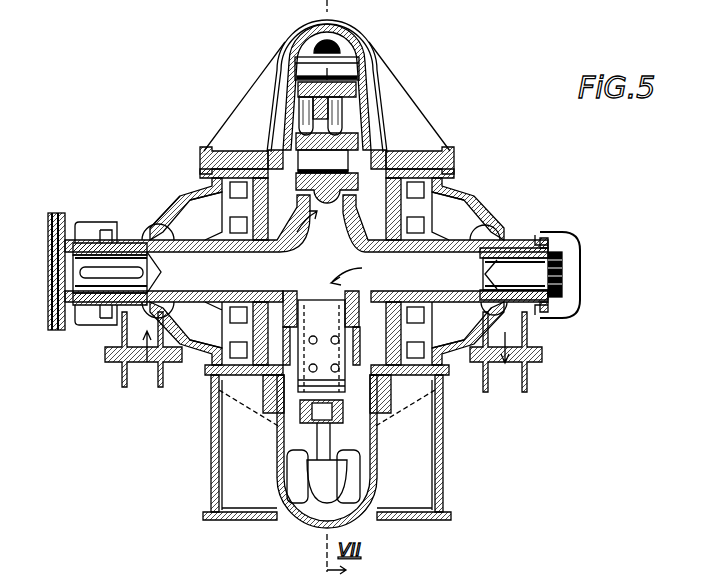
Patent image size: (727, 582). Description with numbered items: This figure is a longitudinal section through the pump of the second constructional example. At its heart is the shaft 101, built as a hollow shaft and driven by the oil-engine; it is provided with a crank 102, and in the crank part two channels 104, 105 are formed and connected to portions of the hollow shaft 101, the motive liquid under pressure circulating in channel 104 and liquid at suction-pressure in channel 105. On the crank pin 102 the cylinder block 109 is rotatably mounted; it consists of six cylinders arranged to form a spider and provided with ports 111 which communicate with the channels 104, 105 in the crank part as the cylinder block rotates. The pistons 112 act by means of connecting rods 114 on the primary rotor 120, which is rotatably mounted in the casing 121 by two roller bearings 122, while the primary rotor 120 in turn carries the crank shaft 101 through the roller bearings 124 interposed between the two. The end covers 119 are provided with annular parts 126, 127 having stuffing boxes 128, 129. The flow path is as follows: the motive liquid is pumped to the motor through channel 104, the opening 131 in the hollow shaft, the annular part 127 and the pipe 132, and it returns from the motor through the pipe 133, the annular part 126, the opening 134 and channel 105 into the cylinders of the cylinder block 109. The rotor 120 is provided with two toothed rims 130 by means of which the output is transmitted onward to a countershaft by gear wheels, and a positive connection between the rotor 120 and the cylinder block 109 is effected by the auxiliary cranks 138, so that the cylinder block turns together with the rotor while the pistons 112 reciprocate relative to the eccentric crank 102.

The shaft 101 is at (72, 302).
The crank 102 is at (442, 176).
The channel 104 is at (355, 274).
The channel 105 is at (306, 280).
The cylinder block 109 is at (352, 140).
The ports 111 is at (410, 150).
The pistons 112 is at (296, 140).
The connecting rods 114 is at (331, 120).
The end covers 119 is at (206, 152).
The primary rotor 120 is at (365, 88).
The casing 121 is at (266, 96).
The roller bearings 122 is at (228, 185).
The roller bearings 124 is at (255, 226).
The annular part 126 is at (152, 222).
The annular part 127 is at (472, 245).
The stuffing box 128 is at (173, 313).
The stuffing box 129 is at (540, 236).
The toothed rims 130 is at (217, 407).
The opening 131 is at (520, 320).
The pipe 132 is at (506, 352).
The pipe 133 is at (143, 350).
The opening 134 is at (100, 245).
The auxiliary cranks 138 is at (378, 445).